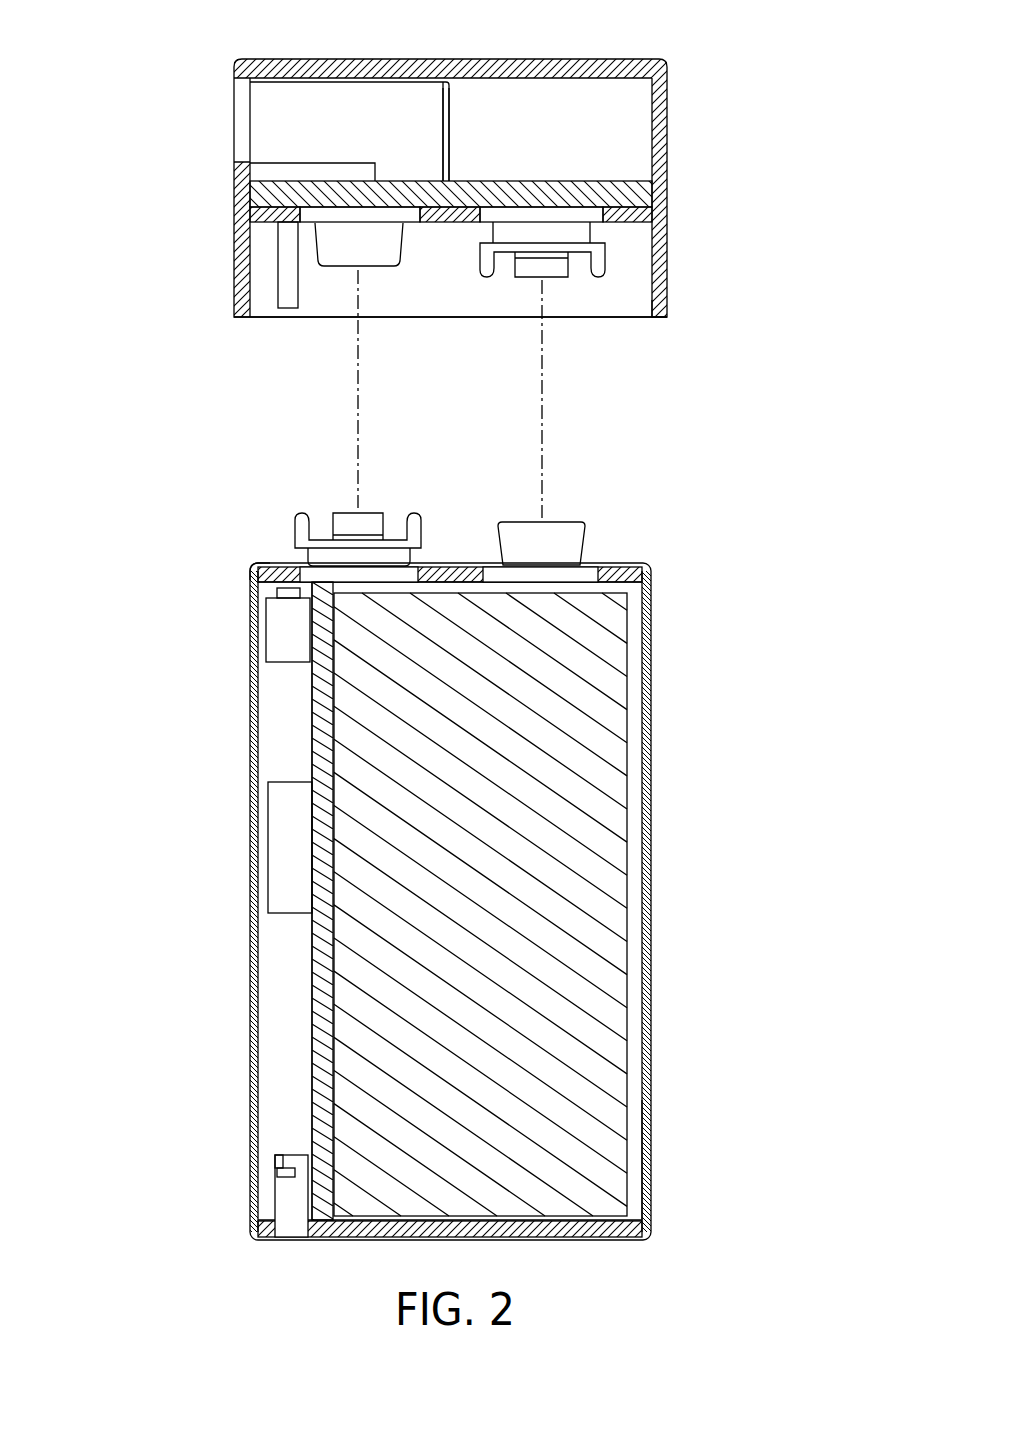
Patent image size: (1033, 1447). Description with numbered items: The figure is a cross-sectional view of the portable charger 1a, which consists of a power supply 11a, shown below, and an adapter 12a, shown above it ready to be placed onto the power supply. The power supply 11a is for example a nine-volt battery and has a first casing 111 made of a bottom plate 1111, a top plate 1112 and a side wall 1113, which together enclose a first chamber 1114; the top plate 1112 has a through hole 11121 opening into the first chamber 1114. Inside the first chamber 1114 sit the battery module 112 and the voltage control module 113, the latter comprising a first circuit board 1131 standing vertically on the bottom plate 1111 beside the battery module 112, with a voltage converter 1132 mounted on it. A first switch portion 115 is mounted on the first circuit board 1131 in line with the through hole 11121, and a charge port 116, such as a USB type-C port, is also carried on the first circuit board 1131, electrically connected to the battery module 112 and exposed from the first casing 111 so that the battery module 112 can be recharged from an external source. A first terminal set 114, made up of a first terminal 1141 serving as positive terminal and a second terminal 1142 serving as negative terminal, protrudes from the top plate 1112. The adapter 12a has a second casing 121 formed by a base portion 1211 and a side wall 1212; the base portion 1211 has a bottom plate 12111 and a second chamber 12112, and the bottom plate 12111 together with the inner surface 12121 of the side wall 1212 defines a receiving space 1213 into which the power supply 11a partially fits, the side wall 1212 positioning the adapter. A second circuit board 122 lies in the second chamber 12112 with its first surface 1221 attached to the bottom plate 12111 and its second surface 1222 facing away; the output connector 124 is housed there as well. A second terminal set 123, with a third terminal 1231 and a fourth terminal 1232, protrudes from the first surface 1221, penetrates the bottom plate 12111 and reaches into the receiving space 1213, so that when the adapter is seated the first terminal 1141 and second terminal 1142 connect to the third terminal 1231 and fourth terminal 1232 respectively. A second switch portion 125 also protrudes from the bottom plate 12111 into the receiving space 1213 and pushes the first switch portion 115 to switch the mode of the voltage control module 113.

The portable charger 1a is at (168, 31).
The adapter 12a is at (686, 80).
The second casing 121 is at (765, 115).
The base portion 1211 is at (660, 130).
The side wall 1212 is at (657, 272).
The bottom plate 12111 is at (278, 215).
The second chamber 12112 is at (594, 112).
The inner surface 12121 is at (650, 288).
The second circuit board 122 is at (275, 194).
The first surface 1221 is at (545, 205).
The second surface 1222 is at (504, 180).
The second terminal set 123 is at (530, 366).
The third terminal 1231 is at (505, 258).
The fourth terminal 1232 is at (380, 250).
The receiving space 1213 is at (583, 292).
The output connector 124 is at (270, 116).
The second switch portion 125 is at (289, 293).
The first terminal set 114 is at (530, 448).
The first terminal 1141 is at (513, 535).
The second terminal 1142 is at (397, 530).
The power supply 11a is at (686, 545).
The first casing 111 is at (667, 717).
The bottom plate 1111 is at (577, 1242).
The top plate 1112 is at (620, 553).
The side wall 1113 is at (650, 783).
The first chamber 1114 is at (633, 1166).
The through hole 11121 is at (283, 563).
The battery module 112 is at (592, 943).
The voltage control module 113 is at (165, 735).
The first circuit board 1131 is at (322, 745).
The voltage converter 1132 is at (290, 842).
The first switch portion 115 is at (290, 627).
The charge port 116 is at (292, 1217).